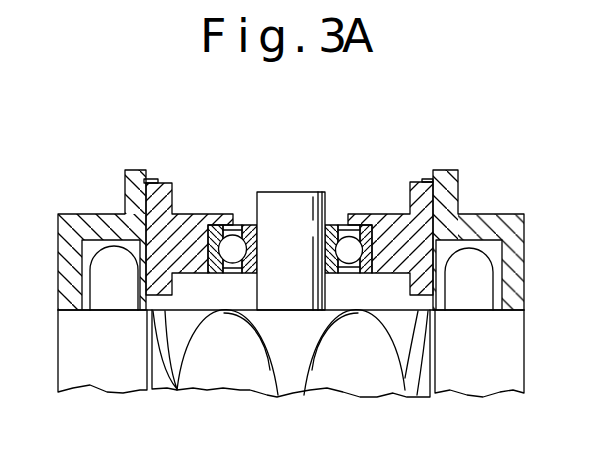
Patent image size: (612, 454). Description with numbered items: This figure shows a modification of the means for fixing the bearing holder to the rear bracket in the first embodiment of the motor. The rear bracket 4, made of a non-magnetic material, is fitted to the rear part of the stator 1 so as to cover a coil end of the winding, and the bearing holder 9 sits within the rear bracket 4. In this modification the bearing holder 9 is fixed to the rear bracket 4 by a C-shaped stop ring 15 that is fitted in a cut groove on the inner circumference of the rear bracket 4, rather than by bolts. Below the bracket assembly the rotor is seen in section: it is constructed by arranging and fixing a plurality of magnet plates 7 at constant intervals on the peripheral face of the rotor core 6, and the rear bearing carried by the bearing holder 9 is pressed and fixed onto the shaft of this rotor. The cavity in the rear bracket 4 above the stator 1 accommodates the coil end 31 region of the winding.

The stator 1 is at (63, 342).
The rear bracket 4 is at (71, 213).
The rotor core 6 is at (297, 368).
The magnet plates 7 is at (387, 390).
The bearing holder 9 is at (387, 215).
The C-shaped stop ring 15 is at (152, 177).
The coil 31 is at (95, 275).